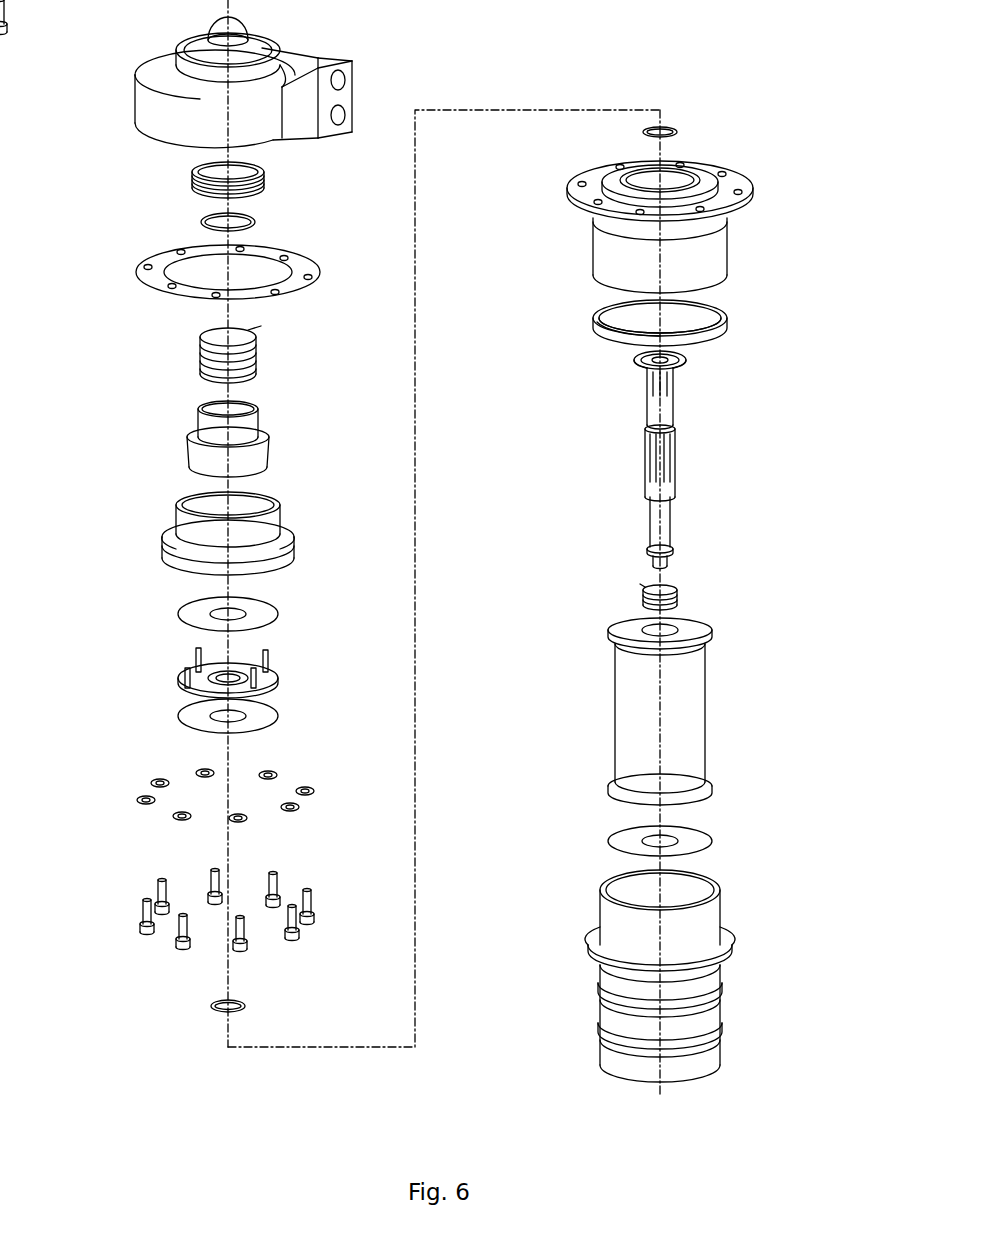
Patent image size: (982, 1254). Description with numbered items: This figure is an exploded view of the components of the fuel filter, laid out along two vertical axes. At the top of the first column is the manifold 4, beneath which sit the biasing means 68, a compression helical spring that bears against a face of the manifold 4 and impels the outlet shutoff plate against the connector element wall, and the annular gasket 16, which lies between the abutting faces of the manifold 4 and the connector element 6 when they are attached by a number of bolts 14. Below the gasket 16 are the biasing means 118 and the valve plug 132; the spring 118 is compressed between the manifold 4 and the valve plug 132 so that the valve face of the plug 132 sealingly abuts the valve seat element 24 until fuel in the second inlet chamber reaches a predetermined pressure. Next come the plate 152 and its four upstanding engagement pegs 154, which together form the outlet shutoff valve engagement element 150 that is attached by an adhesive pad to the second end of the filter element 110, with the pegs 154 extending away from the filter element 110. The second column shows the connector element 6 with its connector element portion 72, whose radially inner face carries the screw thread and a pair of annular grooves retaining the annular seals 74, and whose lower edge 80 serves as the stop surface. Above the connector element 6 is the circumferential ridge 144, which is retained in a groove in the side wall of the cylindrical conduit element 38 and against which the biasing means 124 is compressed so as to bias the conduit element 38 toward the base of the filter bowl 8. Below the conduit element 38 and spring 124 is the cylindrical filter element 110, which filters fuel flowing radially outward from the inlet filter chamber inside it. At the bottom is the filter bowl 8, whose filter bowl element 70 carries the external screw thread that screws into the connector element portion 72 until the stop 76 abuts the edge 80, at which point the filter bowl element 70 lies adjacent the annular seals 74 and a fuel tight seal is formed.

The manifold 4 is at (135, 107).
The biasing means 68 is at (265, 176).
The annular gasket 16 is at (307, 258).
The biasing means 118 is at (250, 355).
The valve plug 132 is at (288, 412).
The valve seat element 24 is at (306, 503).
The plate 152 is at (243, 662).
The engagement pegs 154 is at (198, 662).
The outlet shutoff valve engagement element 150 is at (236, 657).
The bolts 14 is at (313, 902).
The circumferential ridge 144 is at (674, 129).
The connector element 6 is at (752, 197).
The connector element portion 72 is at (728, 262).
The edge 80 is at (718, 292).
The annular seals 74 is at (597, 320).
The conduit element 38 is at (690, 488).
The biasing means 124 is at (679, 597).
The filter element 110 is at (706, 716).
The filter bowl element 70 is at (722, 910).
The stop 76 is at (735, 946).
The filter bowl 8 is at (722, 1006).